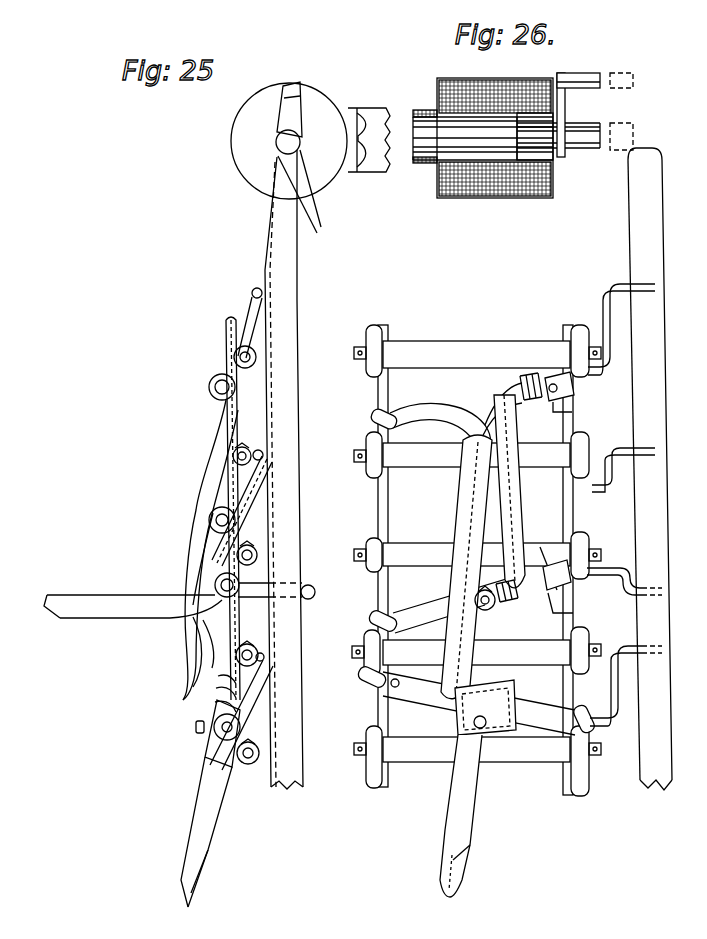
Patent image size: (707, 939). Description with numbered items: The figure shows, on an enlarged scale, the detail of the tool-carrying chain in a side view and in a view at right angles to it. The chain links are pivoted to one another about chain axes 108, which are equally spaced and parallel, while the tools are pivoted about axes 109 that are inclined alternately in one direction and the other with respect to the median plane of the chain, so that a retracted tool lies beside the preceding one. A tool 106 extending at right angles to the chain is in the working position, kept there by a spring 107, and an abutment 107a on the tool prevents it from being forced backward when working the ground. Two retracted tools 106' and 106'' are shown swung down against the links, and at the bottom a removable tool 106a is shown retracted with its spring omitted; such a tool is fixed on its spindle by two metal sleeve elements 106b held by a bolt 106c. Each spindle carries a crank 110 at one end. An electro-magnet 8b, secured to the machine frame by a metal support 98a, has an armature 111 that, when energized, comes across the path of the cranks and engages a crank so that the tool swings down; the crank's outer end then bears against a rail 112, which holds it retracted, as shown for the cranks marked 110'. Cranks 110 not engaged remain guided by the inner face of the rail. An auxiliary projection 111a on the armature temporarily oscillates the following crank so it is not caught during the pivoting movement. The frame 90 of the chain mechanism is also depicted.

In FIG. 25, the electro-magnet 8b is at (240, 160).
In FIG. 26, the electro-magnet 8b is at (508, 198).
In FIG. 26, the frame 90 is at (390, 383).
In FIG. 25, the metal support 98a is at (378, 170).
In FIG. 25, the tool 106 is at (141, 615).
In FIG. 26, the tool 106 is at (506, 609).
In FIG. 25, the retracted tool 106' is at (189, 550).
In FIG. 26, the retracted tool 106' is at (524, 491).
In FIG. 25, the retracted tool 106'' is at (169, 600).
In FIG. 26, the retracted tool 106'' is at (494, 567).
In FIG. 25, the removable tool 106a is at (208, 851).
In FIG. 26, the removable tool 106a is at (455, 830).
In FIG. 25, the metal sleeve element 106b is at (205, 756).
In FIG. 26, the metal sleeve element 106b is at (458, 728).
In FIG. 25, the bolt 106c is at (195, 729).
In FIG. 26, the bolt 106c is at (486, 727).
In FIG. 26, the spring 107 is at (519, 383).
In FIG. 26, the abutment 107a is at (552, 378).
In FIG. 25, the chain axis 108 is at (256, 360).
In FIG. 26, the chain axis 108 is at (366, 364).
In FIG. 25, the tool pivot axis 109 is at (213, 394).
In FIG. 26, the tool pivot axis 109 is at (429, 413).
In FIG. 25, the crank 110 is at (288, 574).
In FIG. 26, the crank 110 is at (643, 502).
In FIG. 25, the retracted crank 110' is at (281, 521).
In FIG. 26, the retracted crank 110' is at (625, 533).
In FIG. 25, the armature 111 is at (312, 189).
In FIG. 26, the armature 111 is at (563, 150).
In FIG. 25, the auxiliary projection 111a is at (300, 84).
In FIG. 26, the auxiliary projection 111a is at (578, 73).
In FIG. 25, the rail 112 is at (286, 304).
In FIG. 26, the rail 112 is at (630, 205).